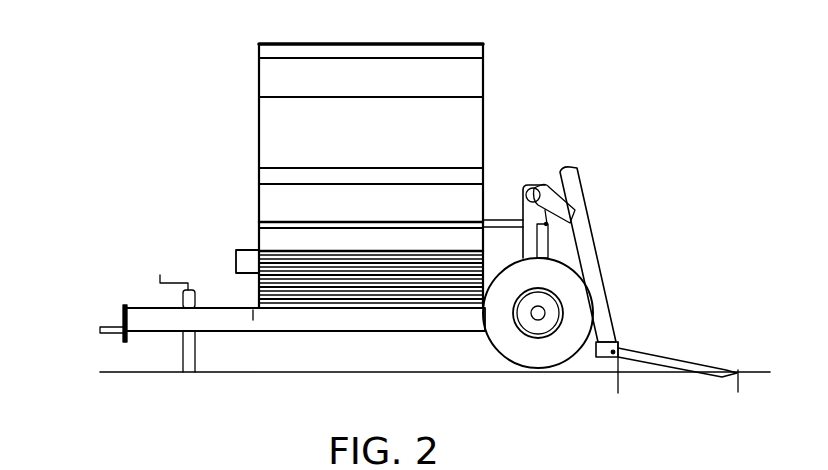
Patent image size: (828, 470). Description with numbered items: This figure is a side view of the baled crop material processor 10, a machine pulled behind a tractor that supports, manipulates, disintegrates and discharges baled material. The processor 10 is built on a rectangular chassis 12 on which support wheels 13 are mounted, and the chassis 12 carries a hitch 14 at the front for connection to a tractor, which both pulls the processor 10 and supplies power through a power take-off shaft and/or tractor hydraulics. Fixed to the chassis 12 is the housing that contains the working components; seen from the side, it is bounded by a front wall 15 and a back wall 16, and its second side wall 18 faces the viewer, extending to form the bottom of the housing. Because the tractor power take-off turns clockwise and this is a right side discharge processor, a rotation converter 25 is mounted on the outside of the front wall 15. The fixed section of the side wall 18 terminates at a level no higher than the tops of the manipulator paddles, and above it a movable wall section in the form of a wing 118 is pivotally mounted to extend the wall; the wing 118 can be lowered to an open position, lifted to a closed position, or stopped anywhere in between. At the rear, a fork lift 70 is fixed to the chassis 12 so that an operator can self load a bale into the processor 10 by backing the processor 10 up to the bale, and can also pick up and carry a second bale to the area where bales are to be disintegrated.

The baled crop material processor 10 is at (528, 70).
The chassis 12 is at (327, 322).
The support wheels 13 is at (540, 362).
The hitch 14 is at (118, 323).
The front wall 15 is at (259, 197).
The back wall 16 is at (483, 191).
The second side wall 18 is at (305, 283).
The rotation converter 25 is at (237, 255).
The fork lift 70 is at (588, 254).
The wing 118 is at (265, 107).